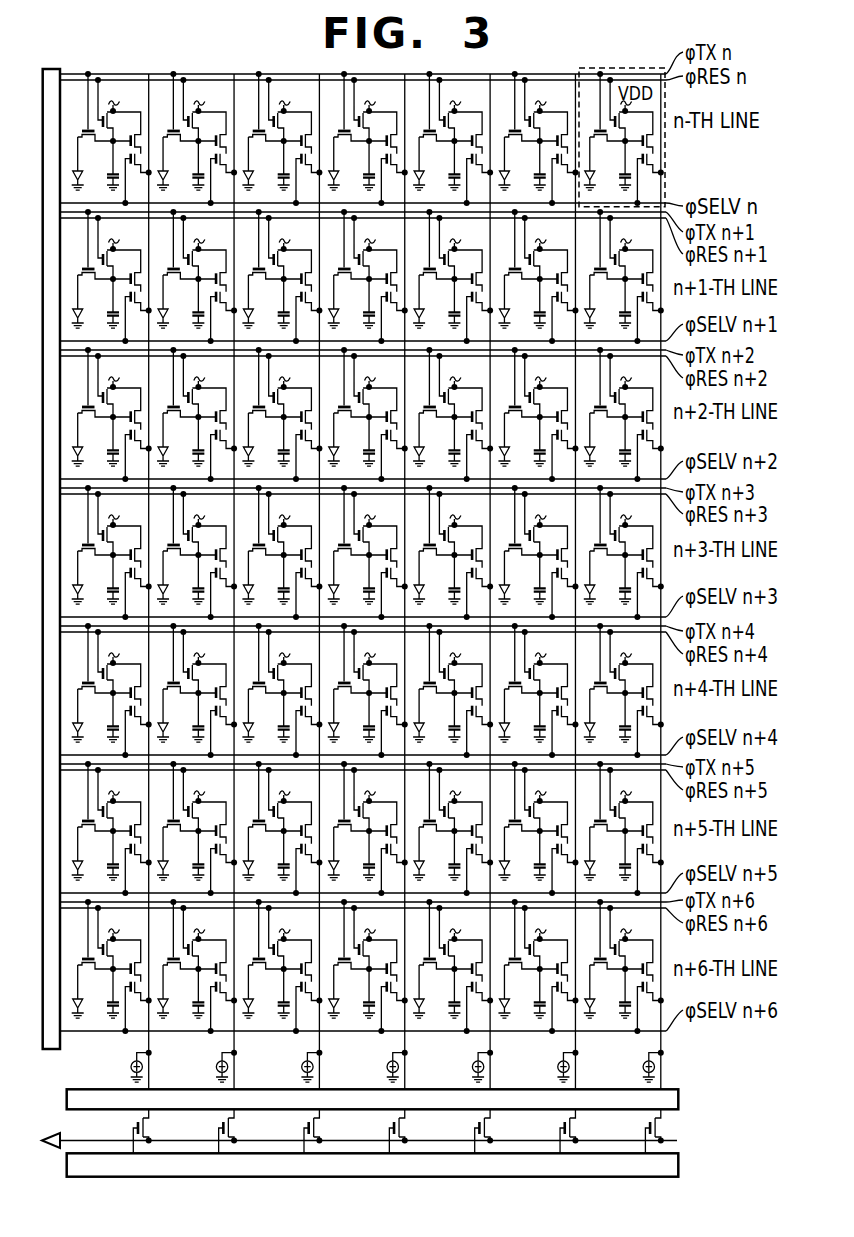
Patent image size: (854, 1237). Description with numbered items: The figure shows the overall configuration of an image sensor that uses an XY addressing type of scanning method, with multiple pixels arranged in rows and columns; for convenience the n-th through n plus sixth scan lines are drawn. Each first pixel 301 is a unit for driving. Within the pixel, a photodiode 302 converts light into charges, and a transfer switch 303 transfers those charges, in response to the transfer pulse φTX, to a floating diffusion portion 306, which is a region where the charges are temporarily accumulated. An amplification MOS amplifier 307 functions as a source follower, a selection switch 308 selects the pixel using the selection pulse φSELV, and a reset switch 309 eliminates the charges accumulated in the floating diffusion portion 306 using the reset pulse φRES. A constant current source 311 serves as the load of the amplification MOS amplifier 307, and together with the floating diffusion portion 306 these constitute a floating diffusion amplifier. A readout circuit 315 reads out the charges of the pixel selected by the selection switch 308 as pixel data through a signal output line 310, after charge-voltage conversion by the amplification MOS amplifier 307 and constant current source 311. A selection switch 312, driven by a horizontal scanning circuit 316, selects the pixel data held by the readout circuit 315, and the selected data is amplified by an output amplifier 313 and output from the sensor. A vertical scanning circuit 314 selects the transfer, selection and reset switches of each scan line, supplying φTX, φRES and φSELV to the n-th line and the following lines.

The first pixel 301 is at (612, 68).
The photodiode 302 is at (594, 178).
The transfer switch 303 is at (588, 138).
The floating diffusion portion 306 is at (632, 175).
The amplification MOS amplifier 307 is at (657, 141).
The selection switch 308 is at (658, 159).
The reset switch 309 is at (622, 124).
The signal output line 310 is at (664, 1036).
The constant current source 311 is at (641, 1066).
The selection switch 312 is at (664, 1124).
The output amplifier 313 is at (62, 1140).
The vertical scanning circuit 314 is at (58, 69).
The readout circuit 315 is at (678, 1099).
The horizontal scanning circuit 316 is at (678, 1163).